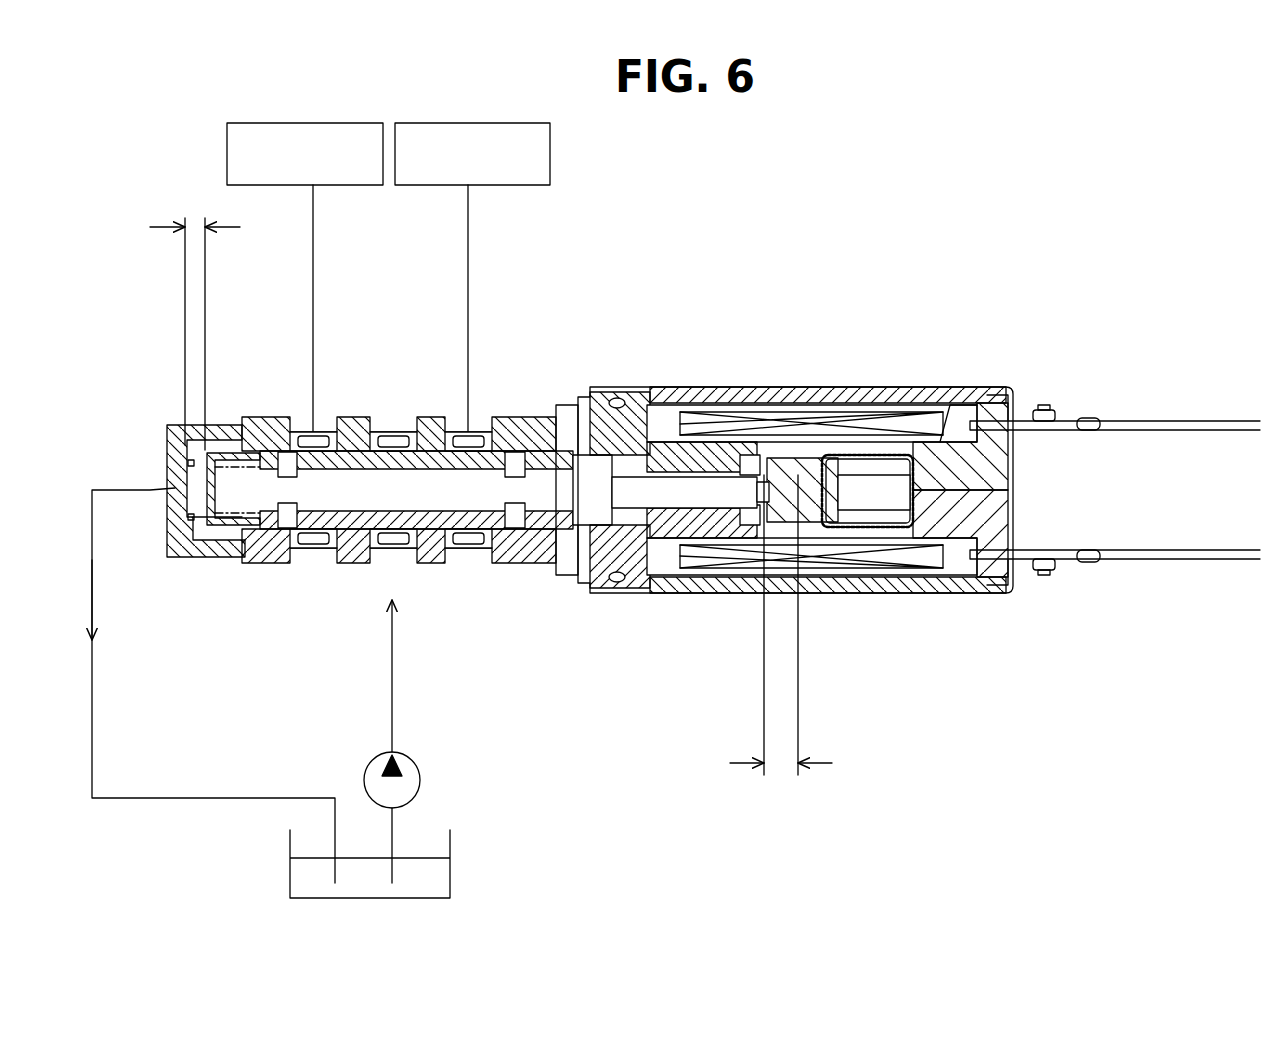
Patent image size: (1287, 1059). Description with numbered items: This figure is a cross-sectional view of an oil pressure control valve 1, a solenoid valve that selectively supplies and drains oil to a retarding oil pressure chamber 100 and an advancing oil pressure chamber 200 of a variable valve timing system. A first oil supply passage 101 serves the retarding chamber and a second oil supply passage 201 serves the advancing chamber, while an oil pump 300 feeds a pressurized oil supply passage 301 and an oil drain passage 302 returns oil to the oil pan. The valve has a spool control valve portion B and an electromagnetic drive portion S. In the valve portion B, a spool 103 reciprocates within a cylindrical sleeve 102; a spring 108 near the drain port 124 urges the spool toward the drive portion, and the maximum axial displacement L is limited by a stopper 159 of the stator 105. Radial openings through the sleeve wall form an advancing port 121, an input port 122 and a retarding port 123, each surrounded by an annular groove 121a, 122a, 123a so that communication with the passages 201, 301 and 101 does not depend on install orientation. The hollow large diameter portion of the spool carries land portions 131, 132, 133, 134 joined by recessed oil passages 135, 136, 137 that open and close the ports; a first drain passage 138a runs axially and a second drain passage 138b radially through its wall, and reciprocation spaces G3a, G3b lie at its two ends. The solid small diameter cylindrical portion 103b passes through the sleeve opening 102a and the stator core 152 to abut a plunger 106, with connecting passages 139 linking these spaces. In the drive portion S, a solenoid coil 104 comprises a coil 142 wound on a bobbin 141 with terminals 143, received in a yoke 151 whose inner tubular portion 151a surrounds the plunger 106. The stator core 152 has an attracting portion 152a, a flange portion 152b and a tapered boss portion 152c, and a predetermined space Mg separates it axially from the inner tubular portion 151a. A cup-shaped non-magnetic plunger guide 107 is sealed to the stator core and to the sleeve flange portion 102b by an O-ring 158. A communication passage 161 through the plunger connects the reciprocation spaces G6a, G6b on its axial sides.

The oil pressure control valve 1 is at (128, 383).
The retarding oil pressure chamber 100 is at (550, 150).
The first oil supply passage 101 is at (470, 210).
The sleeve 102 is at (235, 425).
The opening of the sleeve 102a is at (568, 545).
The flange portion of the sleeve 102b is at (582, 420).
The spool 103 is at (222, 535).
The solid small diameter cylindrical portion 103b is at (690, 565).
The solenoid coil 104 is at (828, 440).
The stator 105 is at (775, 462).
The plunger 106 is at (880, 430).
The plunger guide 107 is at (705, 505).
The spring 108 is at (195, 545).
The advancing port 121 is at (318, 440).
The annular groove 121a is at (330, 556).
The input port 122 is at (376, 455).
The annular groove 122a is at (375, 548).
The retarding port 123 is at (472, 455).
The annular groove 123a is at (455, 548).
The drain port 124 is at (150, 477).
The first land portion 131 is at (236, 450).
The second land portion 132 is at (338, 440).
The third land portion 133 is at (482, 440).
The fourth land portion 134 is at (536, 440).
The first recessed oil passage 135 is at (266, 440).
The second recessed oil passage 136 is at (405, 440).
The third recessed oil passage 137 is at (520, 445).
The first drain passage 138a is at (500, 560).
The second drain passage 138b is at (540, 556).
The connecting passages 139 is at (690, 445).
The bobbin 141 is at (978, 418).
The coil 142 is at (785, 440).
The terminals 143 is at (1178, 420).
The yoke 151 is at (985, 488).
The inner tubular portion 151a is at (960, 490).
The stator core 152 is at (650, 420).
The attracting portion 152a is at (712, 440).
The flange portion of the stator core 152b is at (636, 440).
The boss portion 152c is at (745, 560).
The O-ring 158 is at (617, 398).
The stopper 159 is at (605, 565).
The communication passage 161 is at (850, 495).
The advancing oil pressure chamber 200 is at (227, 150).
The second oil supply passage 201 is at (315, 210).
The oil pump 300 is at (420, 770).
The pressurized oil supply passage 301 is at (392, 705).
The oil drain passage 302 is at (92, 683).
The valve portion B is at (332, 695).
The electromagnetic drive portion S is at (852, 705).
The maximum axial displacement L is at (195, 320).
The predetermined space Mg is at (781, 625).
The reciprocation space G3a is at (490, 545).
The reciprocation space G3b is at (235, 552).
The first reciprocation space G6a is at (875, 505).
The second reciprocation space G6b is at (785, 560).